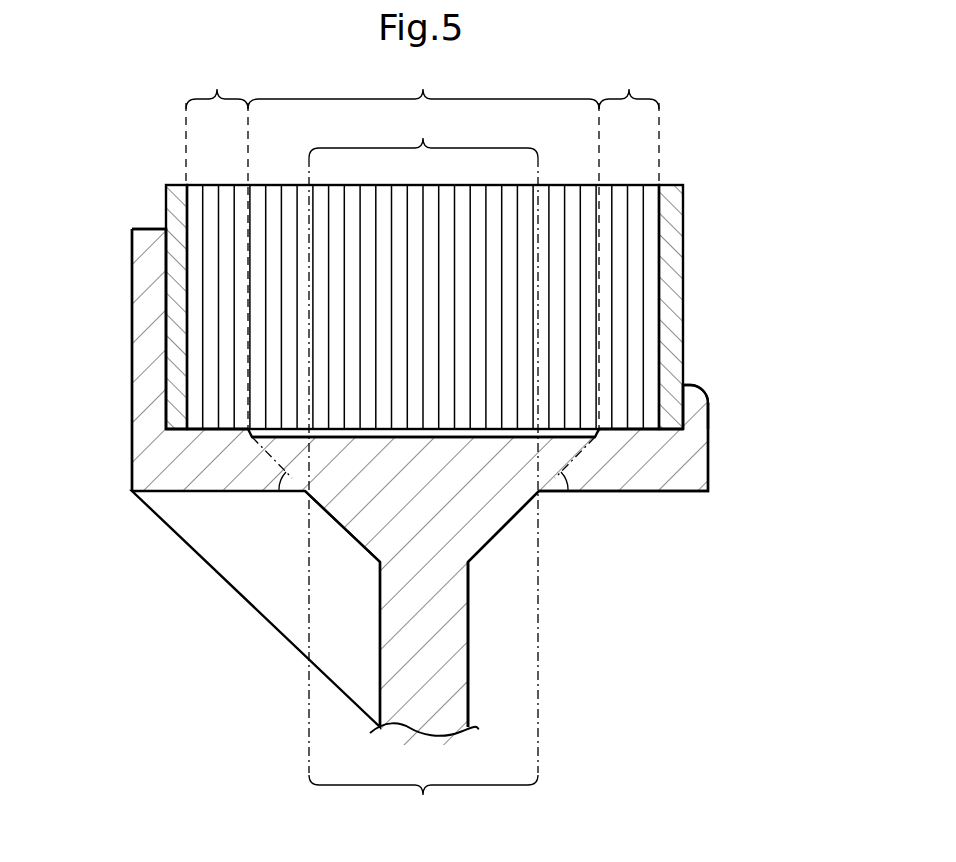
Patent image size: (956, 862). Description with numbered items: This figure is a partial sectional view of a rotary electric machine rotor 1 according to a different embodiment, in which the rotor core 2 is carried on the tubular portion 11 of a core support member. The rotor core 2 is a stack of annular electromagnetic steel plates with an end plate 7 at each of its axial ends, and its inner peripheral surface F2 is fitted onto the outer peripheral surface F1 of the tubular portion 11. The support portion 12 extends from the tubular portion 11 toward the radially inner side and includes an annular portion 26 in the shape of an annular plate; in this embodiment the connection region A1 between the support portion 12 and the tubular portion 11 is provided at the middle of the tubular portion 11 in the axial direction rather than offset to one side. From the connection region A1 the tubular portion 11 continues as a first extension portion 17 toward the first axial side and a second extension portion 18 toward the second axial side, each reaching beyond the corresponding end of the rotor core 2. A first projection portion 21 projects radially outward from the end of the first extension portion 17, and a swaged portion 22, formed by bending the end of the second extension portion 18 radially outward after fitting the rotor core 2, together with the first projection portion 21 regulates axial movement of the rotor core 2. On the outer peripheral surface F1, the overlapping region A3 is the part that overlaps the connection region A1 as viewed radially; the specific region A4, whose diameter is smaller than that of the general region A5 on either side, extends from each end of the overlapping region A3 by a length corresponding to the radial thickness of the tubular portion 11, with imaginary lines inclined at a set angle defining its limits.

The rotary electric machine rotor 1 is at (768, 128).
The rotor core 2 is at (210, 180).
The end plate 7 is at (172, 196).
The tubular portion 11 is at (206, 542).
The support portion 12 is at (347, 642).
The first extension portion 17 is at (135, 397).
The second extension portion 18 is at (693, 457).
The first projection portion 21 is at (150, 320).
The swaged portion 22 is at (693, 400).
The annular portion 26 is at (460, 625).
The outer peripheral surface F1 is at (213, 429).
The inner peripheral surface F2 is at (197, 429).
The connection region A1 is at (423, 806).
The overlapping region A3 is at (423, 439).
The specific region A4 is at (423, 82).
The general region A5 is at (422, 242).